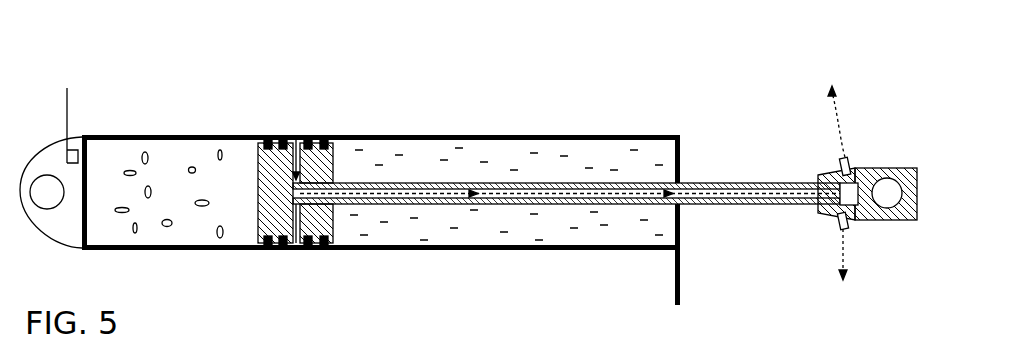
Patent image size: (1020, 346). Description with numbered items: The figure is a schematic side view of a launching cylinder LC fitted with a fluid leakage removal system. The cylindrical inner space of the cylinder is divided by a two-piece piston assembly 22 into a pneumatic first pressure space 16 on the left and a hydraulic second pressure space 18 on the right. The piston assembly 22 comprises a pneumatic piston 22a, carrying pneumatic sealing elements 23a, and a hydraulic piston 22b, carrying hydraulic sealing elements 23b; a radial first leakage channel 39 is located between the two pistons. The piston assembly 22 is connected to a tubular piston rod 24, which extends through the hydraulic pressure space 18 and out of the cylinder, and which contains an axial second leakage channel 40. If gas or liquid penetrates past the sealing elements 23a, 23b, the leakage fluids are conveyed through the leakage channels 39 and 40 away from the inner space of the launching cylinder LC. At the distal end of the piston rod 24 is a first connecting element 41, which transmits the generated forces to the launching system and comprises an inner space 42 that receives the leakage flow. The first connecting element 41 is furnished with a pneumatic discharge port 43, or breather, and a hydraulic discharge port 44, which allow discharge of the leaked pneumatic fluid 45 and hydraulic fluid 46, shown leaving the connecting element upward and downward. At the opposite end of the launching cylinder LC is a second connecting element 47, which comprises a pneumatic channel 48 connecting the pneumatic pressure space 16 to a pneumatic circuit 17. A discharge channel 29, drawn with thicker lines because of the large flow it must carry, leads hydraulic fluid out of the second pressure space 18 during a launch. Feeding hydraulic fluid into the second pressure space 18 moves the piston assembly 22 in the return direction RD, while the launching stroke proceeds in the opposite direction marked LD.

The pneumatic first pressure space 16 is at (208, 233).
The pneumatic circuit 17 is at (68, 98).
The hydraulic second pressure space 18 is at (470, 233).
The piston assembly 22 is at (309, 189).
The pneumatic piston 22a is at (260, 163).
The hydraulic piston 22b is at (336, 160).
The pneumatic sealing elements 23a is at (268, 253).
The hydraulic sealing elements 23b is at (322, 249).
The piston rod 24 is at (566, 156).
The discharge channel 29 is at (680, 300).
The radial first leakage channel 39 is at (298, 138).
The axial second leakage channel 40 is at (707, 190).
The first connecting element 41 is at (907, 170).
The inner space 42 is at (852, 200).
The pneumatic discharge port 43 is at (847, 160).
The hydraulic discharge port 44 is at (840, 221).
The pneumatic fluid 45 is at (845, 157).
The hydraulic fluid 46 is at (850, 262).
The second connecting element 47 is at (55, 165).
The pneumatic channel 48 is at (73, 160).
The launching cylinder LC is at (564, 56).
The return direction RD is at (748, 40).
The extending direction LD is at (792, 40).